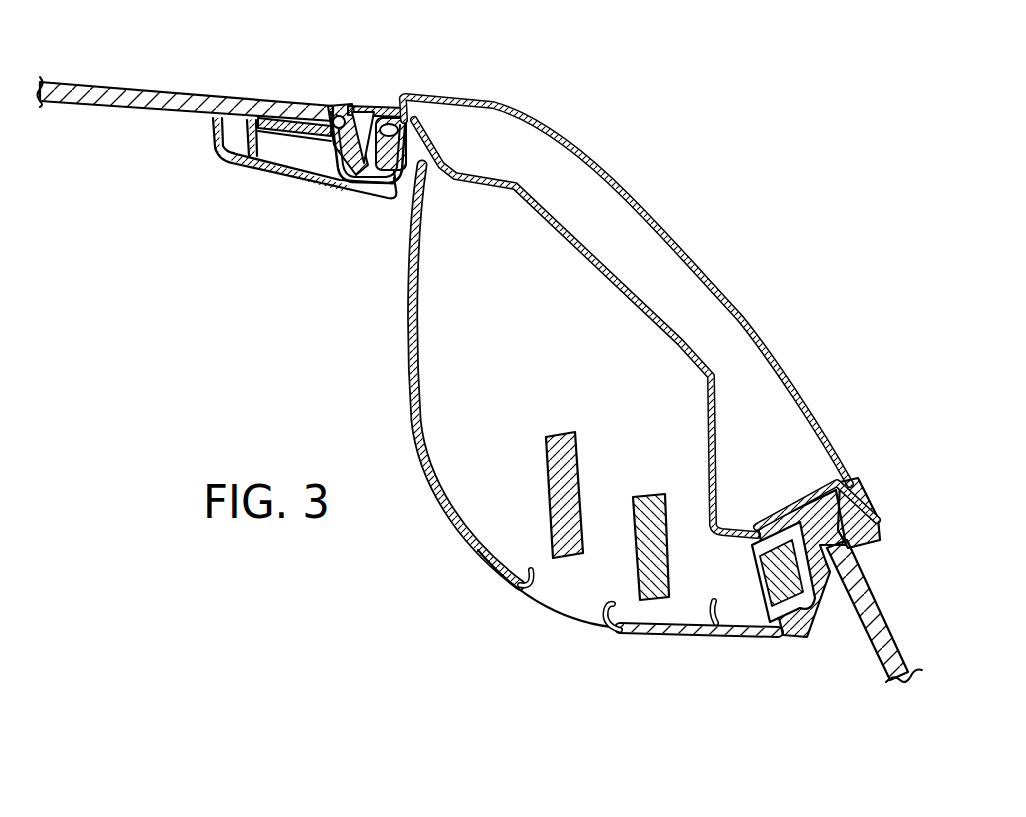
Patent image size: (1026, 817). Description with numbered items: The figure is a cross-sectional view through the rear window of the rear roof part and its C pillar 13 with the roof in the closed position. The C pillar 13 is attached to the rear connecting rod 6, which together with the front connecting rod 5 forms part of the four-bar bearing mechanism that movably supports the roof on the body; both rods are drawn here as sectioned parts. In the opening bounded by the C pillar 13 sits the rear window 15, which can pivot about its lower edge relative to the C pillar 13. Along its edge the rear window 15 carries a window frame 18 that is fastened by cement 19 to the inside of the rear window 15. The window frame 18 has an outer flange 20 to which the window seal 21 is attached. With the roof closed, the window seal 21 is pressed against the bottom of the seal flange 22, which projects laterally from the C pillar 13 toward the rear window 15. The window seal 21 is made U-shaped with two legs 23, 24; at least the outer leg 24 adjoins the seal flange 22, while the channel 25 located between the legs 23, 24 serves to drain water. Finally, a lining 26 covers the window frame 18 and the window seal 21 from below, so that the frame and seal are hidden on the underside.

The front connecting rod 5 is at (566, 542).
The rear connecting rod 6 is at (658, 592).
The C pillar 13 is at (629, 197).
The rear window 15 is at (127, 92).
The window frame 18 is at (303, 162).
The cement 19 is at (289, 112).
The outer flange 20 is at (386, 186).
The window seal 21 is at (377, 110).
The seal flange 22 is at (399, 142).
The leg 23 is at (350, 108).
The outer leg 24 is at (422, 152).
The channel 25 is at (362, 155).
The lining 26 is at (260, 168).